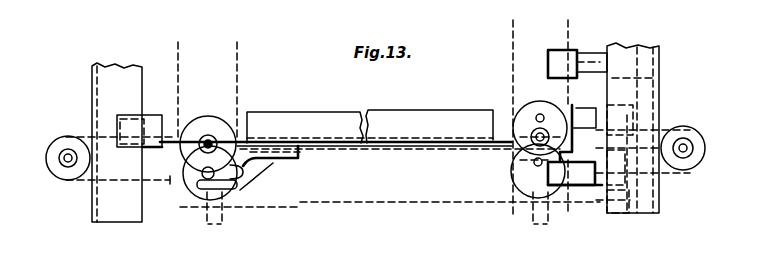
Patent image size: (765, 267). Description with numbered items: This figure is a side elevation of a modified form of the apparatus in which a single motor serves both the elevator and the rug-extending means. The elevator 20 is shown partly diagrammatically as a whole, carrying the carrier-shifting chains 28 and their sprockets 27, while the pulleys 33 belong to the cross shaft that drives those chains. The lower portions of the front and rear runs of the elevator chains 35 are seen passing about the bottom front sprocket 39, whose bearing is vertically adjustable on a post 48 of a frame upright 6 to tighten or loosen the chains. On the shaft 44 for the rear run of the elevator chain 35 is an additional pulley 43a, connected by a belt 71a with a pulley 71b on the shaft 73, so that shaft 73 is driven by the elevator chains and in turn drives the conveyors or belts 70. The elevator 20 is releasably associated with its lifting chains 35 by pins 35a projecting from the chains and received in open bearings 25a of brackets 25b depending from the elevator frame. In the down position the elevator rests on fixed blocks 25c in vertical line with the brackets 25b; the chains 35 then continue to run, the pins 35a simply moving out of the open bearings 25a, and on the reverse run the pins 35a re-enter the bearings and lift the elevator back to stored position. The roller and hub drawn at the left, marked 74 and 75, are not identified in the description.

The frame uprights 6 is at (97, 97).
The elevator 20 is at (415, 104).
The open bearings 25a is at (245, 192).
The brackets 25b is at (273, 163).
The blocks 25c is at (222, 228).
The sprockets 27 is at (201, 192).
The carrier-shifting chains 28 is at (383, 151).
The pulleys 33 is at (536, 100).
The elevator chains 35 is at (237, 52).
The pins 35a is at (193, 197).
The bottom front sprocket 39 is at (205, 122).
The additional pulley 43a is at (533, 116).
The shaft 44 is at (512, 136).
The post 48 is at (553, 82).
The conveyors 70 is at (183, 181).
The belt 71a is at (667, 128).
The pulley 71b is at (705, 156).
The shaft 73 is at (691, 148).
The roller 74 is at (58, 142).
The hub 75 is at (62, 168).